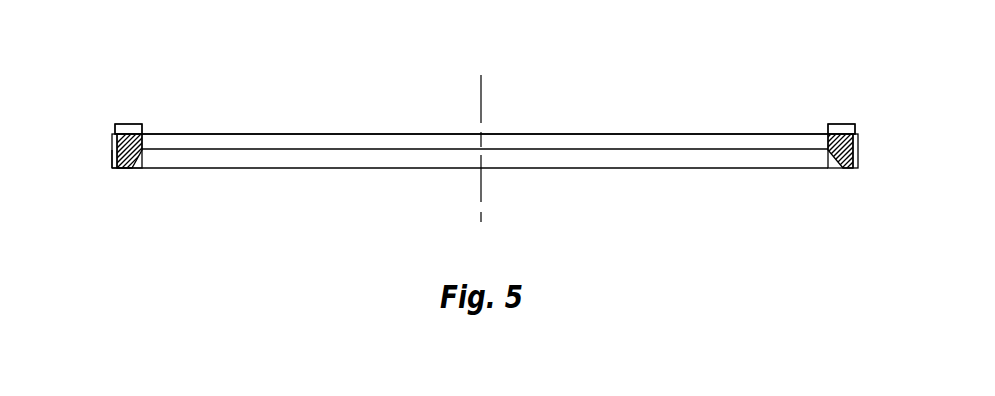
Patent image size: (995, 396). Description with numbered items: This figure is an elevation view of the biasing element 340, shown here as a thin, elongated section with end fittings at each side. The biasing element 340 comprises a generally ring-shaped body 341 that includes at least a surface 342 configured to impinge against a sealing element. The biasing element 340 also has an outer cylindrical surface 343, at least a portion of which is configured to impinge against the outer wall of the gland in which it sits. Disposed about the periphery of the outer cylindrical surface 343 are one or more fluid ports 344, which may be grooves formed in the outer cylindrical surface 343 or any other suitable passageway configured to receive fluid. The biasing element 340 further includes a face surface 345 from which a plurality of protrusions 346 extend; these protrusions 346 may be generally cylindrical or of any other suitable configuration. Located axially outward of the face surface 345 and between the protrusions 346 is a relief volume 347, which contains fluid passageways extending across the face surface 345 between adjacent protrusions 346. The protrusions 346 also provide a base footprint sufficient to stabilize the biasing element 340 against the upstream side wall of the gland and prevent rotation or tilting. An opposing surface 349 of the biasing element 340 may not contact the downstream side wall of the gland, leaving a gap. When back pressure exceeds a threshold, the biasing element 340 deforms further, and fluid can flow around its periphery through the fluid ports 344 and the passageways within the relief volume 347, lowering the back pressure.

The biasing element 340 is at (606, 89).
The ring-shaped body 341 is at (290, 138).
The surface 342 is at (137, 156).
The outer cylindrical surface 343 is at (113, 167).
The fluid port 344 is at (113, 150).
The face surface 345 is at (118, 124).
The protrusions 346 is at (138, 124).
The relief volume 347 is at (830, 131).
The opposing surface 349 is at (847, 168).